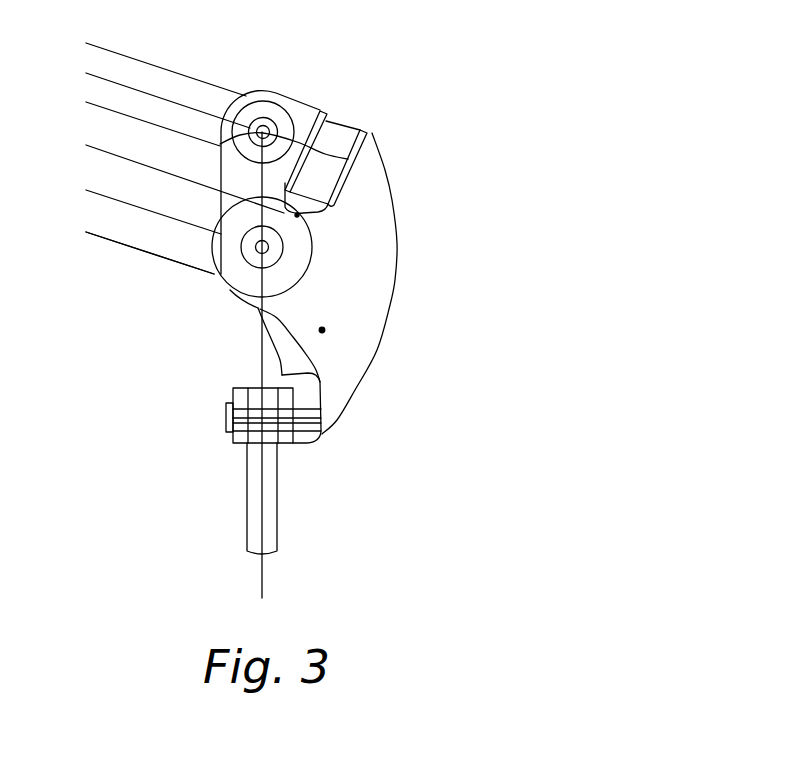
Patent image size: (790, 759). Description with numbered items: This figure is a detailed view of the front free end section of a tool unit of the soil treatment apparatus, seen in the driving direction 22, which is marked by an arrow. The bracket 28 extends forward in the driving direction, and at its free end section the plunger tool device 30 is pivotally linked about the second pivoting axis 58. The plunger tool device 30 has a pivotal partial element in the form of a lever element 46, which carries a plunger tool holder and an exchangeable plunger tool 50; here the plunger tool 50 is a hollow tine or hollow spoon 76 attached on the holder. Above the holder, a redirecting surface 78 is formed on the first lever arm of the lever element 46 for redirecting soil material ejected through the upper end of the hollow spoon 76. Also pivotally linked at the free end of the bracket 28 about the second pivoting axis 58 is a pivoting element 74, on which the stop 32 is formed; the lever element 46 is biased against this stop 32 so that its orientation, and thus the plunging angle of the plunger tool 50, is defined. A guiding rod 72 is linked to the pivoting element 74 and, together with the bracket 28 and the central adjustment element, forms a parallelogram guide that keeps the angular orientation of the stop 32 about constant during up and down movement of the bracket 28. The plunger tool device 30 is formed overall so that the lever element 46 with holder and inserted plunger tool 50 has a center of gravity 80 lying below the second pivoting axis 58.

The driving direction 22 is at (562, 188).
The bracket 28 is at (137, 248).
The plunger tool device 30 is at (441, 261).
The stop 32 is at (349, 158).
The lever element 46 is at (385, 252).
The plunger tool 50 is at (330, 531).
The second pivoting axis 58 is at (262, 252).
The guiding rod 72 is at (155, 73).
The pivoting element 74 is at (292, 102).
The hollow spoon 76 is at (275, 495).
The redirecting surface 78 is at (293, 356).
The center of gravity 80 is at (336, 328).